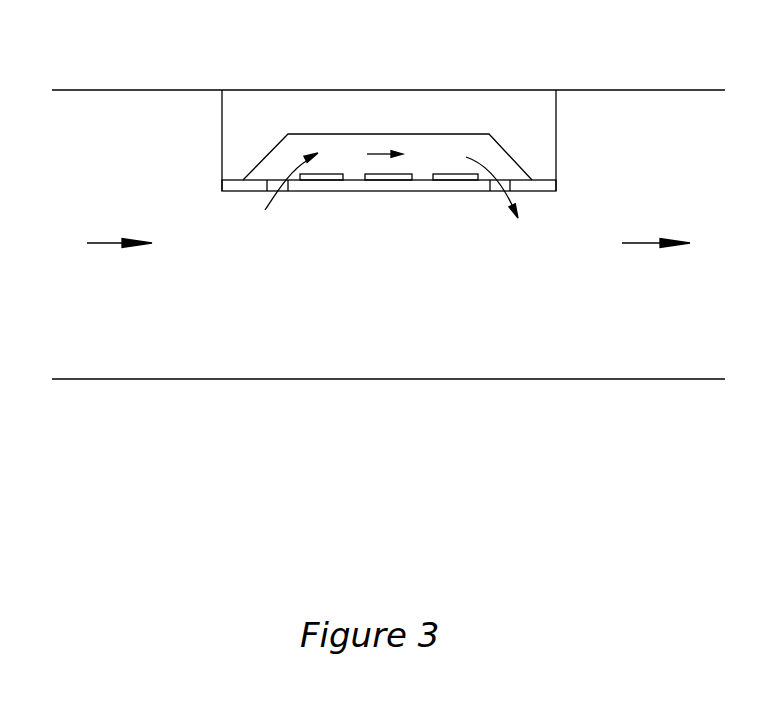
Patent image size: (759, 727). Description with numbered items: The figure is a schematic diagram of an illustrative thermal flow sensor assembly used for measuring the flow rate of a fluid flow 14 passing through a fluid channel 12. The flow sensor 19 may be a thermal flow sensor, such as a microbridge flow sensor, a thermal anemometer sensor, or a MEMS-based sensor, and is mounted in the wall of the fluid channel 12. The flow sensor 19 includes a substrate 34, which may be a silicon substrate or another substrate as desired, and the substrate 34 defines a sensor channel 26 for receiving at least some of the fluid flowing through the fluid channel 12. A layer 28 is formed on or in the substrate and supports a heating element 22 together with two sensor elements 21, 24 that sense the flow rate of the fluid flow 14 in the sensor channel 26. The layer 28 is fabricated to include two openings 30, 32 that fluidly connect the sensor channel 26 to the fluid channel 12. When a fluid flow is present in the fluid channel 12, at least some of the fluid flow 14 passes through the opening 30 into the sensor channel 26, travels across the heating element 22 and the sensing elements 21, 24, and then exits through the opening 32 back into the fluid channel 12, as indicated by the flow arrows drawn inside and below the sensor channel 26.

The fluid channel 12 is at (120, 132).
The fluid flow 14 is at (100, 244).
The flow sensor 19 is at (268, 100).
The sensor element 21 is at (338, 181).
The heating element 22 is at (388, 181).
The sensor element 24 is at (443, 181).
The sensor channel 26 is at (480, 143).
The layer 28 is at (222, 185).
The opening 30 is at (283, 192).
The opening 32 is at (496, 193).
The substrate 34 is at (222, 135).